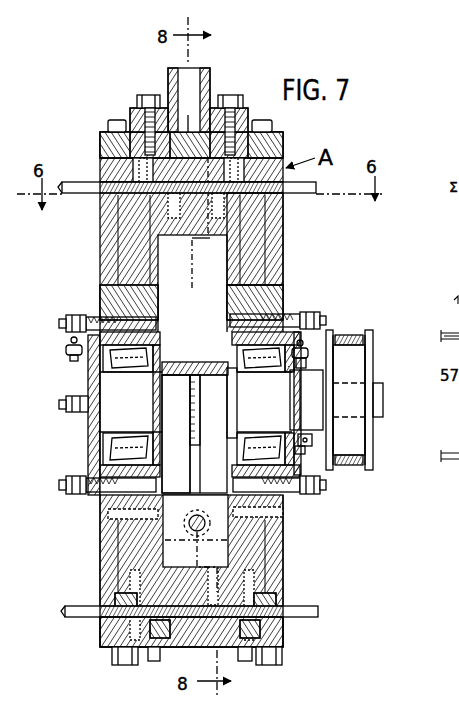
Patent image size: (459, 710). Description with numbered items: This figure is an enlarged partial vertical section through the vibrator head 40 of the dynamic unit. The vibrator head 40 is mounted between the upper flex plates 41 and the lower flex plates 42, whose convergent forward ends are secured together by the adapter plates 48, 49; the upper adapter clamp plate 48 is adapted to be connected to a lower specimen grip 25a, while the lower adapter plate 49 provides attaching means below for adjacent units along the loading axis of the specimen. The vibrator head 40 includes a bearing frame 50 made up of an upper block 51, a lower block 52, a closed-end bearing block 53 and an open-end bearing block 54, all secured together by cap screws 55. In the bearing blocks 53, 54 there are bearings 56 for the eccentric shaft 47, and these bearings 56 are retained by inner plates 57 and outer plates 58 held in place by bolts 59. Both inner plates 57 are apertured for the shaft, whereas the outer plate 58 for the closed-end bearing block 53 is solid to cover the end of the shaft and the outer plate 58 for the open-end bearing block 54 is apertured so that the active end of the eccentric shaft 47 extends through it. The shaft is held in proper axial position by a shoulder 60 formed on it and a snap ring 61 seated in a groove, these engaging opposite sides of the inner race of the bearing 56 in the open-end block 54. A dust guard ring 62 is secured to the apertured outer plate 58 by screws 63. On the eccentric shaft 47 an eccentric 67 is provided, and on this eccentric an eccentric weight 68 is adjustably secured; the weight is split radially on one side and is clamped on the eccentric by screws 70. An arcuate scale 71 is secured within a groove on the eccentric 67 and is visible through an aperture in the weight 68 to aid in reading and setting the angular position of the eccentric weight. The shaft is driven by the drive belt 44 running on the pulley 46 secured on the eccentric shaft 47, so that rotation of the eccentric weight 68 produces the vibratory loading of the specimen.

The vertical shaft 25a is at (211, 81).
The vibrator head 40 is at (98, 268).
The upper flex plates 41 is at (79, 182).
The lower flex plates 42 is at (310, 606).
The drive belt 44 is at (343, 334).
The pulley 46 is at (368, 348).
The eccentric shaft 47 is at (381, 397).
The upper adapter clamp plate 48 is at (281, 160).
The adapter plate 49 is at (285, 632).
The bearing frame 50 is at (86, 368).
The upper block 51 is at (281, 249).
The lower block 52 is at (285, 548).
The closed-end bearing block 53 is at (106, 304).
The open-end bearing block 54 is at (284, 296).
The cap screws 55 is at (100, 236).
The bearings 56 is at (103, 453).
The inner plates 57 is at (229, 334).
The outer plates 58 is at (92, 429).
The bolts 59 is at (65, 323).
The shoulder 60 is at (246, 403).
The snap ring 61 is at (290, 400).
The dust guard ring 62 is at (309, 448).
The screws 63 is at (292, 370).
The eccentric 67 is at (184, 483).
The eccentric weight 68 is at (170, 552).
The screws 70 is at (188, 527).
The arcuate scale 71 is at (197, 402).